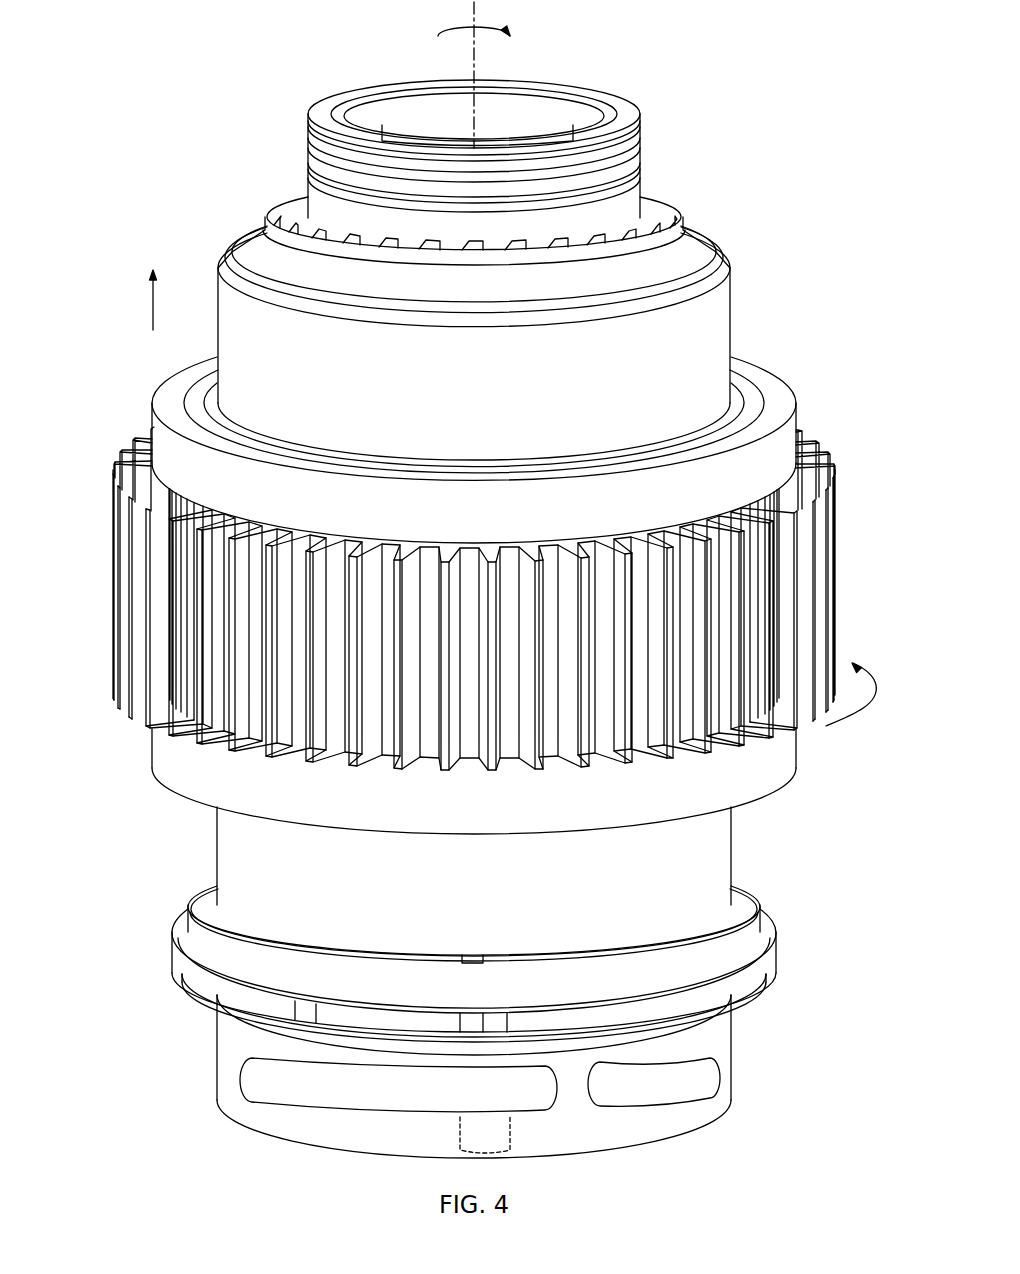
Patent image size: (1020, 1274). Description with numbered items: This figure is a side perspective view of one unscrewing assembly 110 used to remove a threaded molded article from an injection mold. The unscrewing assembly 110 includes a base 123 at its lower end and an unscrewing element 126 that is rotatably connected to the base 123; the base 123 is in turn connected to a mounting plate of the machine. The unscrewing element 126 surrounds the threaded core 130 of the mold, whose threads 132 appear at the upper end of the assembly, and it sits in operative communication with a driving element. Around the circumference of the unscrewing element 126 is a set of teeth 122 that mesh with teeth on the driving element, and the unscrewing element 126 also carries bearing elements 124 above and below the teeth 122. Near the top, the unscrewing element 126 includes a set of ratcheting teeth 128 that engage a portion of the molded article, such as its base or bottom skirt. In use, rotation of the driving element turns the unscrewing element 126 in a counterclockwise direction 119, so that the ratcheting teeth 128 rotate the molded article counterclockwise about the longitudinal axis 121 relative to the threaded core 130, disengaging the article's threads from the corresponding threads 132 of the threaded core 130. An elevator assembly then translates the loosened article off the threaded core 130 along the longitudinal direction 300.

The unscrewing assembly 110 is at (476, 580).
The counterclockwise direction 119 is at (857, 716).
The longitudinal axis 121 is at (480, 72).
The teeth 122 is at (98, 548).
The base 123 is at (775, 947).
The bearing elements 124 is at (772, 452).
The unscrewing element 126 is at (705, 344).
The ratcheting teeth 128 is at (341, 222).
The threaded core 130 is at (640, 165).
The threads 132 is at (303, 149).
The longitudinal direction 300 is at (150, 302).